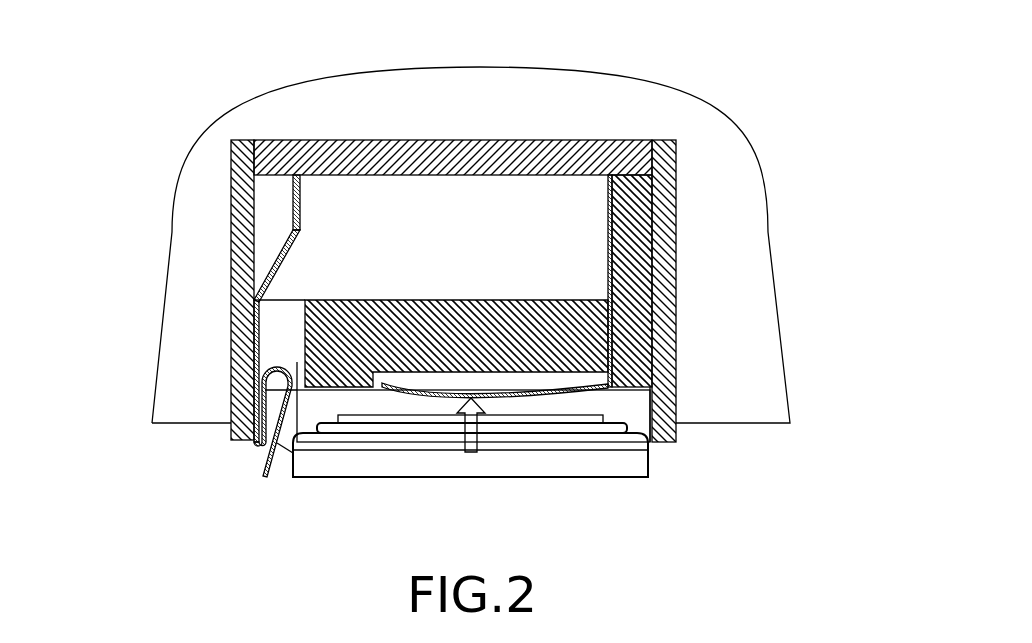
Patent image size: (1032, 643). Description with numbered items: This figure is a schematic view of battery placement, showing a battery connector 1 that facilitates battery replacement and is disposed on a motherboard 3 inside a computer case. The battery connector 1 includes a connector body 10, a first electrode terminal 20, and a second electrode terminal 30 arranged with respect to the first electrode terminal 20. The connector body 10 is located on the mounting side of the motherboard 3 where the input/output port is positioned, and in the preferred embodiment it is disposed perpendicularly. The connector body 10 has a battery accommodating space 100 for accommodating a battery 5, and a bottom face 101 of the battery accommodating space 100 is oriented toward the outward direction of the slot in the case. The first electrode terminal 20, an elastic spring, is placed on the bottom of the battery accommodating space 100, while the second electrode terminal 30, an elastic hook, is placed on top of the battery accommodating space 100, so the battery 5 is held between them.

The battery connector 1 is at (501, 124).
The motherboard 3 is at (737, 350).
The connector body 10 is at (647, 283).
The battery accommodating space 100 is at (630, 408).
The bottom face 101 is at (340, 390).
The first electrode terminal 20 is at (432, 397).
The second electrode terminal 30 is at (265, 455).
The battery 5 is at (552, 468).